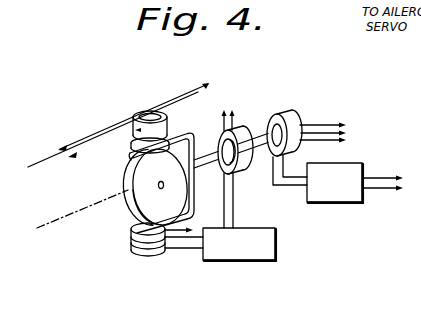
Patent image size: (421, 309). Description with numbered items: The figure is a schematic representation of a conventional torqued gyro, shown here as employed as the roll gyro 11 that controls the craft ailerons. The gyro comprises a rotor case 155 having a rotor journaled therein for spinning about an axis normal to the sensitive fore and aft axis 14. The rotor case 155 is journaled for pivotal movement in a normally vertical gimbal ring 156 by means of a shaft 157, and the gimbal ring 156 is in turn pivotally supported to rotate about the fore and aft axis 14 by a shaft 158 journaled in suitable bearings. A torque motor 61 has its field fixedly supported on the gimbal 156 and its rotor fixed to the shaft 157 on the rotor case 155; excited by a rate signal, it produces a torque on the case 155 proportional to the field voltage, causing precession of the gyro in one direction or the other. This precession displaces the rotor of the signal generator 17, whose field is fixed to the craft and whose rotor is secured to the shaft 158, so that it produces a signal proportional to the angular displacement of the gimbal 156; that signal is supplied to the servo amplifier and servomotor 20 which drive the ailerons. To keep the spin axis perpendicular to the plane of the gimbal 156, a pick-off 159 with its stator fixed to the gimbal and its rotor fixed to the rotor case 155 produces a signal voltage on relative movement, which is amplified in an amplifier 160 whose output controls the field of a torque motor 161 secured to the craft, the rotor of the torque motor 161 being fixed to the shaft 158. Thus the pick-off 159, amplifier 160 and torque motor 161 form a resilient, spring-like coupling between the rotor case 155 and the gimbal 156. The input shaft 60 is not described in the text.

The input shaft 60 is at (89, 144).
The torque motor 61 is at (137, 113).
The shaft 157 is at (131, 152).
The roll gyro 11 is at (118, 187).
The fore and aft axis 14 is at (66, 214).
The rotor case 155 is at (127, 204).
The pick-off 159 is at (134, 251).
The gimbal ring 156 is at (194, 190).
The shaft 158 is at (206, 157).
The torque motor 161 is at (240, 130).
The signal generator 17 is at (291, 117).
The amplifier 160 is at (213, 262).
The servo amplifier and servomotor 20 is at (322, 203).